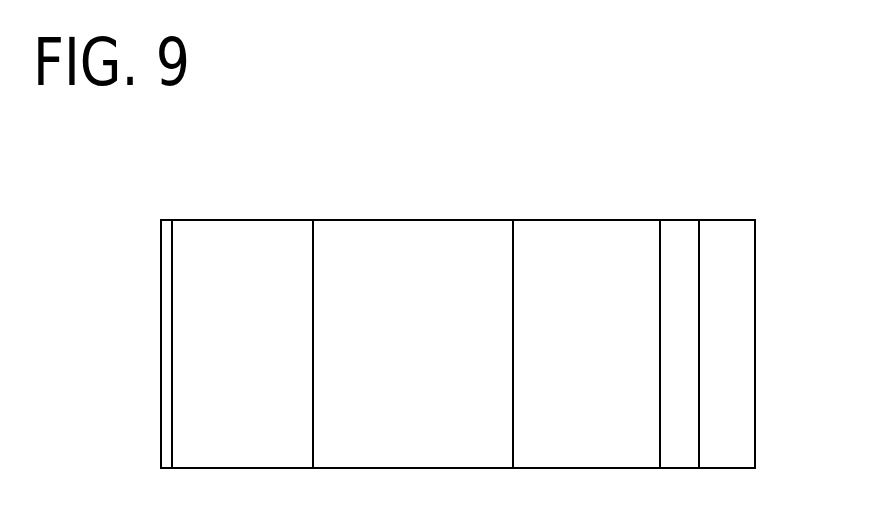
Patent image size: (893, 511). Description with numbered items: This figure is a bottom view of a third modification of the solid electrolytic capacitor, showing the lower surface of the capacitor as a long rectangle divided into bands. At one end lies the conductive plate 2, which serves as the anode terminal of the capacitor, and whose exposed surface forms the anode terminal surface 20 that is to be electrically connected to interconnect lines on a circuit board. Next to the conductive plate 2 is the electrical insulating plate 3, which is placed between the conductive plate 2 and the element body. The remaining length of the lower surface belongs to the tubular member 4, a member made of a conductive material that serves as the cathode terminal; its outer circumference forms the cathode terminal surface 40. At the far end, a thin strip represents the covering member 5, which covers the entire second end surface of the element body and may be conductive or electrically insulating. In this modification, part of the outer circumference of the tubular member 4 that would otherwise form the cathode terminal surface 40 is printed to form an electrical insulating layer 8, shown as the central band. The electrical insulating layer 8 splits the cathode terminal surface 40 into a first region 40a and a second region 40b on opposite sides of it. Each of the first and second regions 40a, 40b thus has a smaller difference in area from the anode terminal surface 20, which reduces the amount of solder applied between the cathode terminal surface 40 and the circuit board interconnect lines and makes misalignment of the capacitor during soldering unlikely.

The conductive plate 2 is at (728, 230).
The electrical insulating plate 3 is at (680, 230).
The tubular member 4 is at (241, 220).
The covering member 5 is at (168, 315).
The electrical insulating layer 8 is at (417, 240).
The anode terminal surface 20 is at (724, 337).
The cathode terminal surface 40 is at (613, 250).
The first region 40a is at (215, 441).
The second region 40b is at (562, 441).